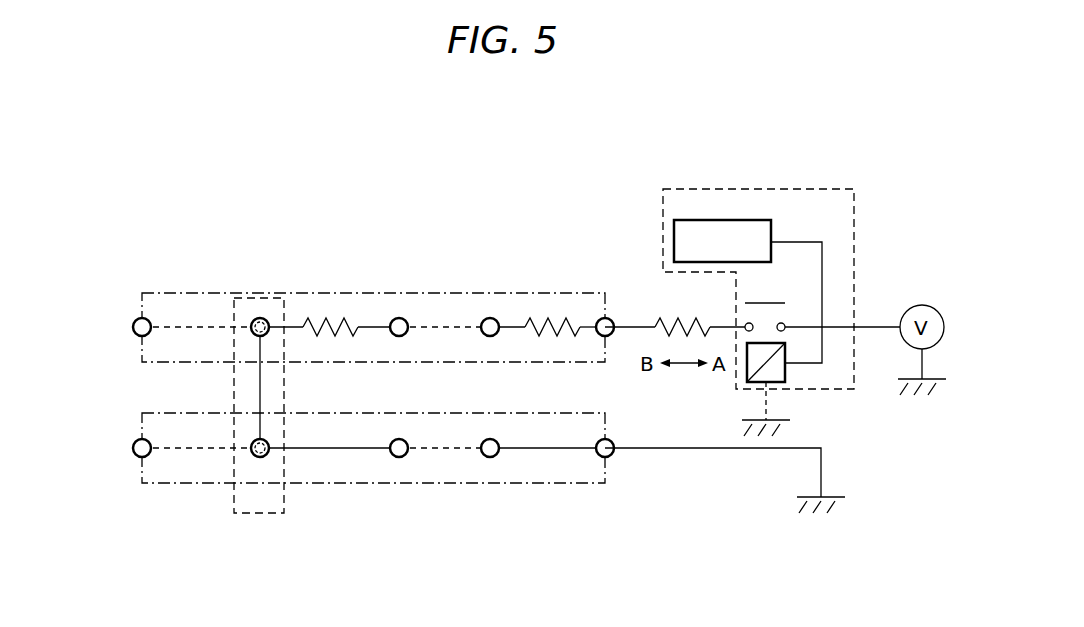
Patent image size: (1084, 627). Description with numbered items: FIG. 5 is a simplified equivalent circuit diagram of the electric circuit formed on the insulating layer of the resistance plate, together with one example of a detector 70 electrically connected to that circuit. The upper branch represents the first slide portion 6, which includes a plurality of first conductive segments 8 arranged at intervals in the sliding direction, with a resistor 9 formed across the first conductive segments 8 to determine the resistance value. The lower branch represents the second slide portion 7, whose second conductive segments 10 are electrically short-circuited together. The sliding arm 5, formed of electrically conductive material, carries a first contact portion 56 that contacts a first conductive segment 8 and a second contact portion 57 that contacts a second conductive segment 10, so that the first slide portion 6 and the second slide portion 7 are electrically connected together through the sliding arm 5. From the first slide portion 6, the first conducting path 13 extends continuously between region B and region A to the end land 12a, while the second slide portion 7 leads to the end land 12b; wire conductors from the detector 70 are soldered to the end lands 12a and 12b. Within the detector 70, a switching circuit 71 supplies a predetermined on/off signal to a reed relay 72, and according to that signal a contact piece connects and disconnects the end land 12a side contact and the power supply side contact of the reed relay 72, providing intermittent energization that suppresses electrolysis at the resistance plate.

The sliding arm 5 is at (250, 515).
The first slide portion 6 is at (170, 283).
The second slide portion 7 is at (130, 411).
The first conductive segment 8 is at (133, 327).
The resistor 9 is at (333, 318).
The second conductive segment 10 is at (133, 448).
The end land 12a is at (727, 325).
The end land 12b is at (823, 470).
The first conducting path 13 is at (665, 330).
The first contact portion 56 is at (268, 320).
The second contact portion 57 is at (253, 456).
The detector 70 is at (862, 188).
The switching circuit 71 is at (771, 230).
The reed relay 72 is at (805, 308).